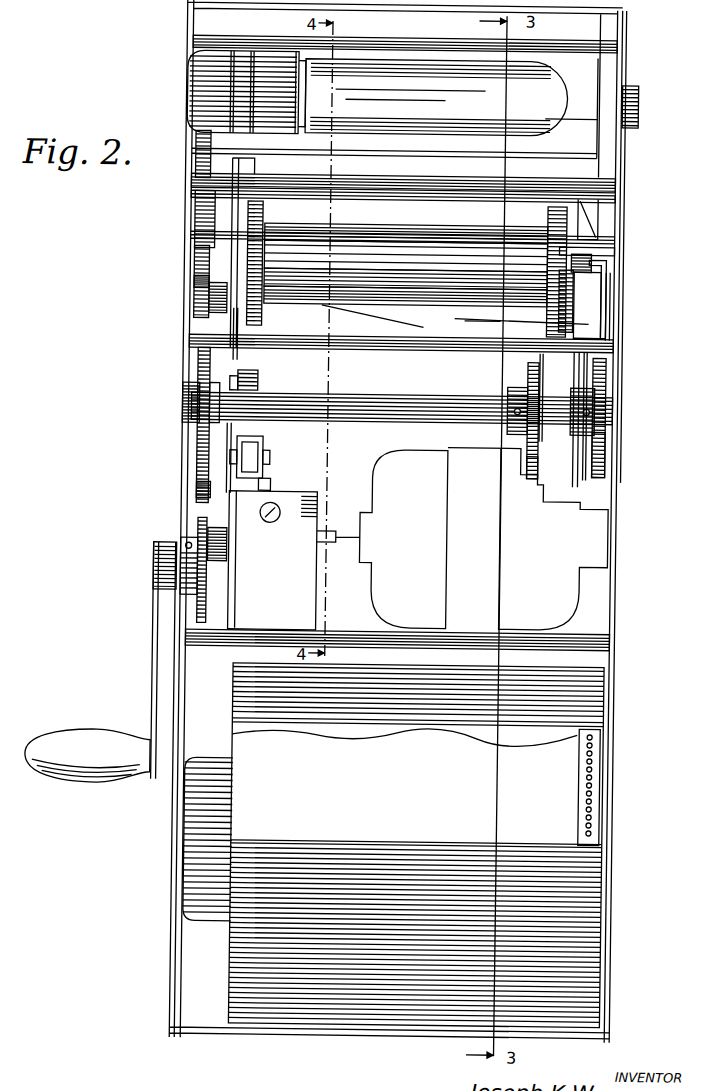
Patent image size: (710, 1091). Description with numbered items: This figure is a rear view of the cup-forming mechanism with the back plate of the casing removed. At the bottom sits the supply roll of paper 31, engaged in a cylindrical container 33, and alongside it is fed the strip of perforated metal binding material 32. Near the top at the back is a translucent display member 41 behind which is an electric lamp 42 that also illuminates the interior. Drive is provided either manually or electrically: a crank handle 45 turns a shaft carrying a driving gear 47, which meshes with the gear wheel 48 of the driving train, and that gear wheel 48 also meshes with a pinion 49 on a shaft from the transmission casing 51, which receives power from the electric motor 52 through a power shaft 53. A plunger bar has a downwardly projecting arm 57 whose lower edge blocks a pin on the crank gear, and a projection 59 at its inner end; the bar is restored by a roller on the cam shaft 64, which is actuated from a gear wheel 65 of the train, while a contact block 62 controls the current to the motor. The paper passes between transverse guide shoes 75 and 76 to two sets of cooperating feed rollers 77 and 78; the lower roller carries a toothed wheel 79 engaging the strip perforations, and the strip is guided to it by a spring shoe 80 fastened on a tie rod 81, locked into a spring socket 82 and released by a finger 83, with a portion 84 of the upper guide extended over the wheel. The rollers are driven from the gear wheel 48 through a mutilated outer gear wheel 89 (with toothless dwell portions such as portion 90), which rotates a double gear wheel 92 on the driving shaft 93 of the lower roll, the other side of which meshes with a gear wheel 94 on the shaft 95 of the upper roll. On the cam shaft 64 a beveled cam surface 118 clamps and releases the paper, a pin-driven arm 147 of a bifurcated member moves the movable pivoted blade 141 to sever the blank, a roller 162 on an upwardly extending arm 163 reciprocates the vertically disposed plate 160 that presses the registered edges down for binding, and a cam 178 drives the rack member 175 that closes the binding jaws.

The supply roll of paper 31 is at (561, 756).
The perforated metal binding strip 32 is at (602, 780).
The cylindrical container 33 is at (527, 864).
The display member 41 is at (572, 35).
The electric lamp 42 is at (537, 82).
The crank handle 45 is at (155, 686).
The driving gear 47 is at (211, 615).
The gear wheel of the driving train 48 is at (221, 453).
The pinion 49 is at (210, 524).
The transmission casing 51 is at (318, 522).
The electric motor 52 is at (391, 472).
The power shaft 53 is at (327, 550).
The downwardly projecting arm 57 is at (265, 491).
The projection 59 is at (236, 376).
The contact block 62 is at (249, 460).
The cam shaft 64 is at (356, 406).
The gear wheel 65 is at (221, 495).
The upper guide shoe 75 is at (395, 262).
The lower guide shoe 76 is at (429, 283).
The feed roller 77 is at (259, 320).
The feed roller 78 is at (550, 319).
The toothed wheel 79 is at (574, 313).
The spring shoe 80 is at (597, 297).
The tie rod 81 is at (430, 350).
The spring socket 82 is at (607, 278).
The finger 83 is at (603, 266).
The extended portion of upper guide 84 is at (575, 263).
The outer gear wheel 89 is at (193, 166).
The toothless portion 90 is at (196, 201).
The double gear wheel 92 is at (197, 278).
The driving shaft 93 is at (409, 299).
The gear wheel 94 is at (194, 253).
The shaft of upper feed roll 95 is at (352, 241).
The beveled cam surface 118 is at (580, 479).
The movable pivoted blade 141 is at (479, 322).
The arm of bifurcated member 147 is at (572, 474).
The vertically disposed plate 160 is at (579, 227).
The roller 162 is at (604, 458).
The upwardly extending arm 163 is at (598, 373).
The rack member 175 is at (538, 361).
The cam 178 is at (531, 467).